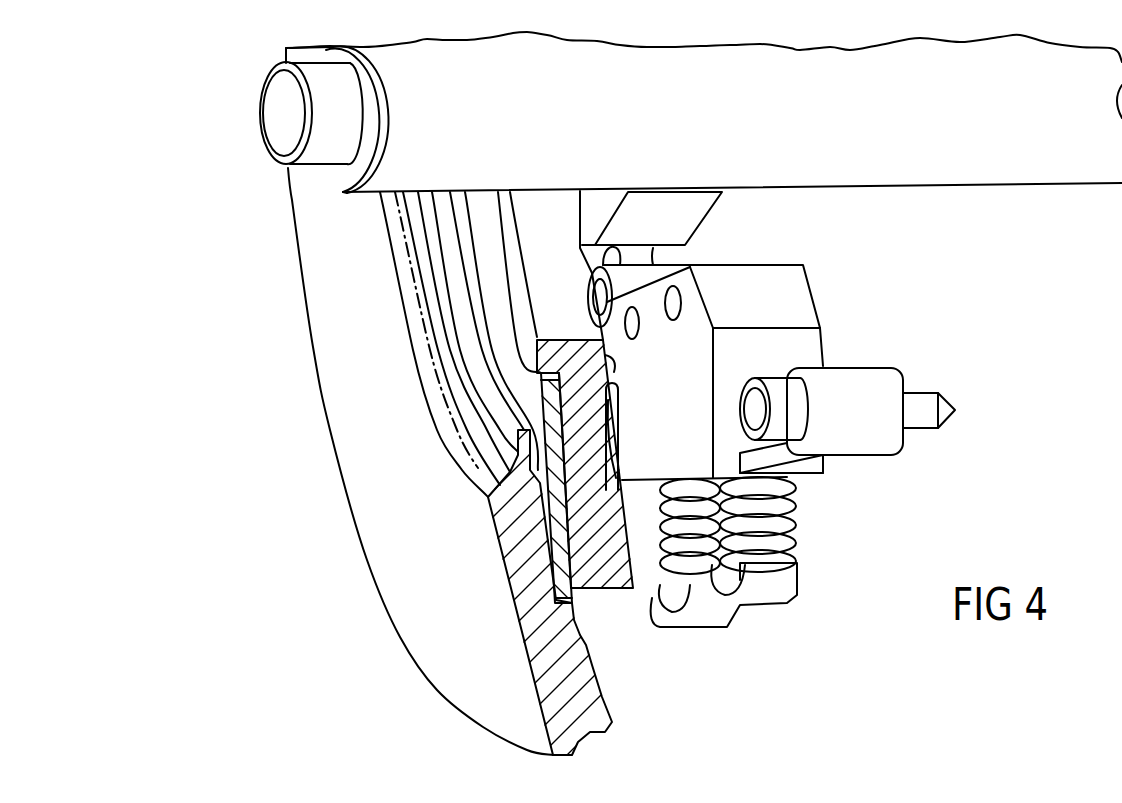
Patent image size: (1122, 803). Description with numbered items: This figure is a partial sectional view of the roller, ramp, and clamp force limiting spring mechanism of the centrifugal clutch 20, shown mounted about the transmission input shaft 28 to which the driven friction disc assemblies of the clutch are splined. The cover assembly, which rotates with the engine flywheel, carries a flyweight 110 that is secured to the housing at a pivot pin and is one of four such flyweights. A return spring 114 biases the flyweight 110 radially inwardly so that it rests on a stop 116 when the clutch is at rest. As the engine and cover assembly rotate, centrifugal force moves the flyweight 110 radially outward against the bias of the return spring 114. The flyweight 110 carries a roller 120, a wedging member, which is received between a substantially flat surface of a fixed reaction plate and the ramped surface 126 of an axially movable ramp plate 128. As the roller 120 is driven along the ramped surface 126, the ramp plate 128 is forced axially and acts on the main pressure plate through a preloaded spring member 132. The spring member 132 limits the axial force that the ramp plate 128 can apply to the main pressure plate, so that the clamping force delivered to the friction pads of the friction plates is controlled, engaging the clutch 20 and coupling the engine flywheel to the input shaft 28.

The clutch 20 is at (352, 630).
The transmission input shaft 28 is at (268, 97).
The flyweight 110 is at (674, 409).
The return spring 114 is at (797, 520).
The stop 116 is at (610, 252).
The roller 120 is at (603, 437).
The ramped surface 126 is at (607, 373).
The ramp plate 128 is at (608, 570).
The preloaded spring member 132 is at (573, 592).